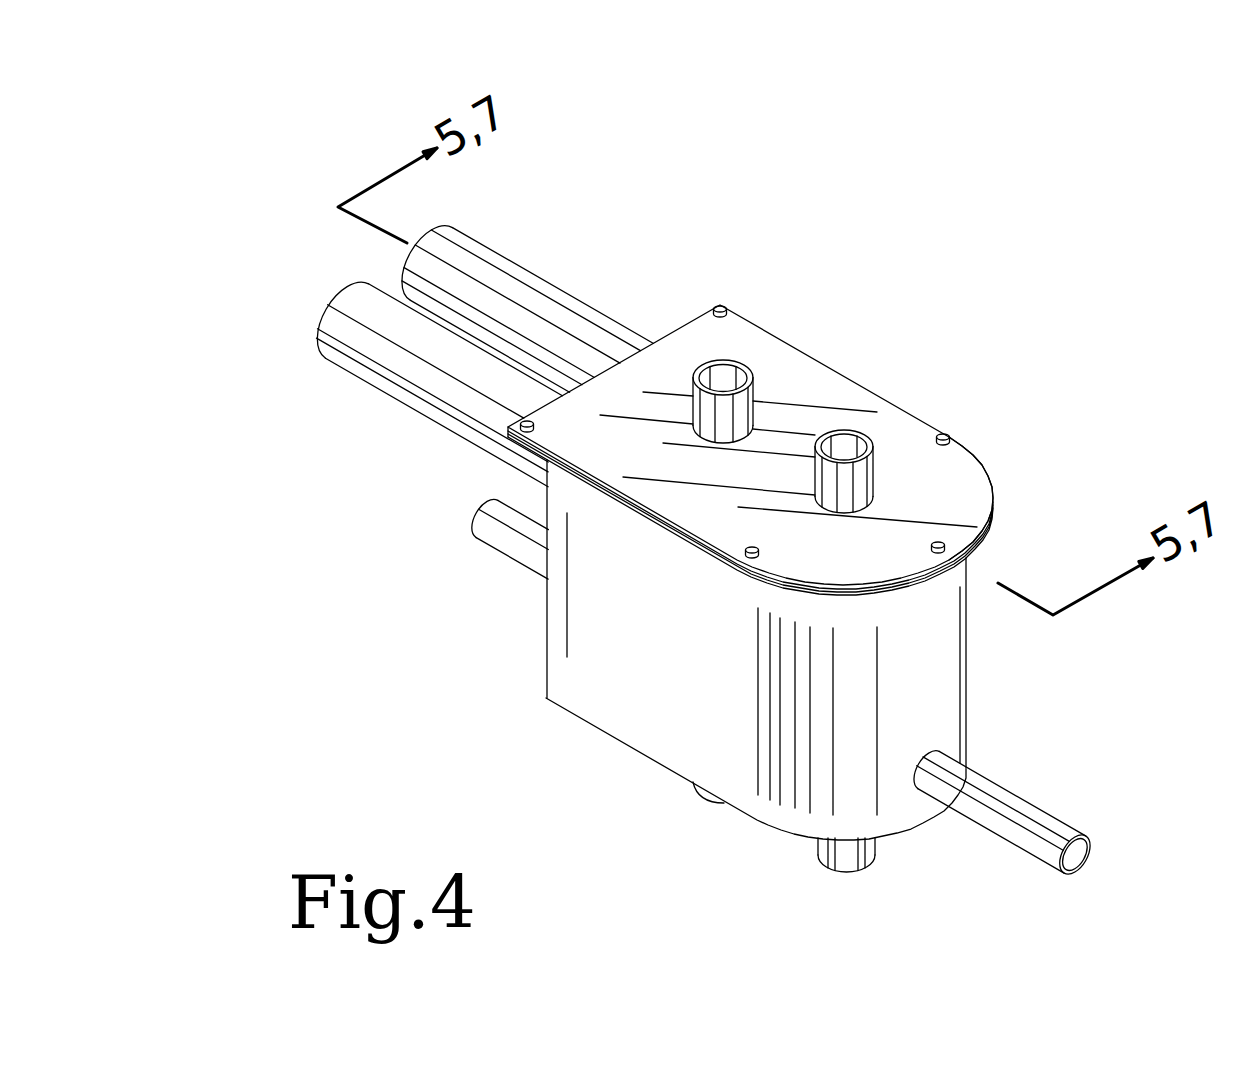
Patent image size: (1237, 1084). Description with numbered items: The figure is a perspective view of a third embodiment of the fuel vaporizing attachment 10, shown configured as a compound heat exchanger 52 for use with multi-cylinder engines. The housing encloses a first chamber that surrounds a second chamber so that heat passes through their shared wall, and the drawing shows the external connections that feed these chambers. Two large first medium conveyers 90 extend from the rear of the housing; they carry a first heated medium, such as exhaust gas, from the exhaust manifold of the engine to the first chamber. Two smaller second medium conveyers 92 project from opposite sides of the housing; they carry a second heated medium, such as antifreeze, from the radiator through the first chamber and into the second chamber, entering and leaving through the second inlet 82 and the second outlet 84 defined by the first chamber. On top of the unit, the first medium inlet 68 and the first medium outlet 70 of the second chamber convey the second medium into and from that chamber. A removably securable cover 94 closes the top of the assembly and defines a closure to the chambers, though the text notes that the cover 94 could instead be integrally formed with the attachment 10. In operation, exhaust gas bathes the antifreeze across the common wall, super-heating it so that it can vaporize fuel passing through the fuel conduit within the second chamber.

The fuel vaporizing attachment 10 is at (950, 378).
The compound heat exchanger 52 is at (833, 325).
The first medium inlet 68 is at (657, 337).
The first medium outlet 70 is at (528, 485).
The second inlet 82 is at (543, 583).
The second outlet 84 is at (977, 737).
The first medium conveyer 90 is at (493, 250).
The second medium conveyer 92 is at (497, 550).
The cover 94 is at (968, 473).